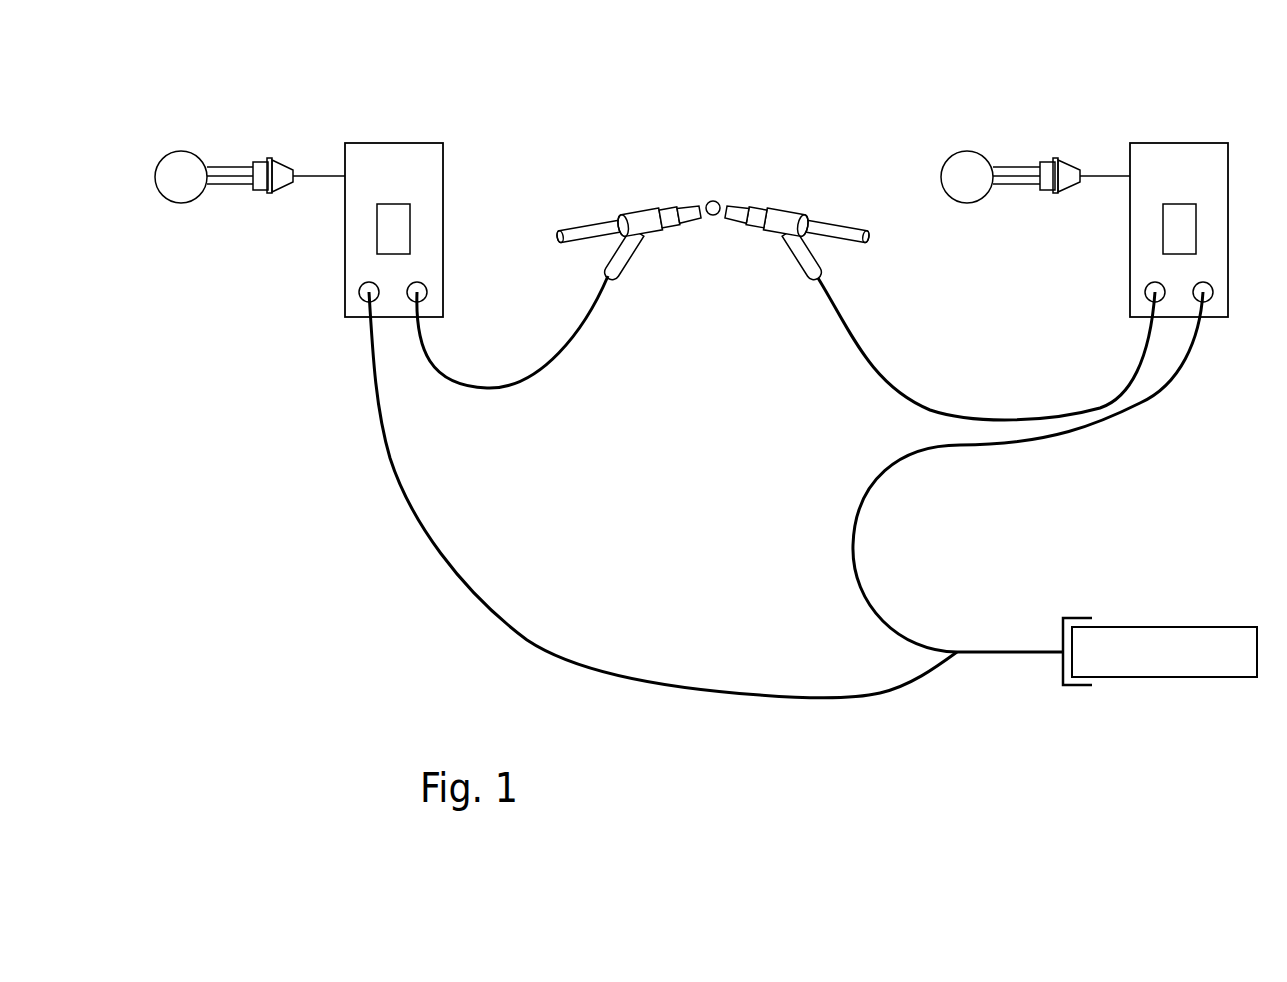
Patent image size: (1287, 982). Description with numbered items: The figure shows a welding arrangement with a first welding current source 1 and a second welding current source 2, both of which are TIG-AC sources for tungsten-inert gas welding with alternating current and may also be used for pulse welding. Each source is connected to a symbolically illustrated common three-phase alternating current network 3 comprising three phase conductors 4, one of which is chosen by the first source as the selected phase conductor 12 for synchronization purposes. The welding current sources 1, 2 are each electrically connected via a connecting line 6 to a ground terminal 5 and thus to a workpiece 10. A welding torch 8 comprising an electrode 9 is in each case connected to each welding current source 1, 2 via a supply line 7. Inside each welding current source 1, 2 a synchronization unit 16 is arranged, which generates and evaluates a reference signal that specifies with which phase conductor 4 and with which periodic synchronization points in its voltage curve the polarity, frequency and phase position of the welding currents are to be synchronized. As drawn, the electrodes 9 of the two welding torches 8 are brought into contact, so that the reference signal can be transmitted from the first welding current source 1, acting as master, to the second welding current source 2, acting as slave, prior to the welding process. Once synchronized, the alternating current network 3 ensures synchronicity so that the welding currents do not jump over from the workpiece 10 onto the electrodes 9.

The first welding current source 1 is at (428, 143).
The second welding current source 2 is at (1207, 143).
The three-phase alternating current network 3 is at (170, 152).
The phase conductors 4 is at (237, 172).
The ground terminal 5 is at (1075, 687).
The connecting line 6 is at (578, 663).
The supply line 7 is at (503, 390).
The welding torch 8 is at (637, 207).
The electrode 9 is at (721, 201).
The workpiece 10 is at (1178, 678).
The selected phase conductor 12 is at (222, 173).
The synchronization unit 16 is at (392, 232).